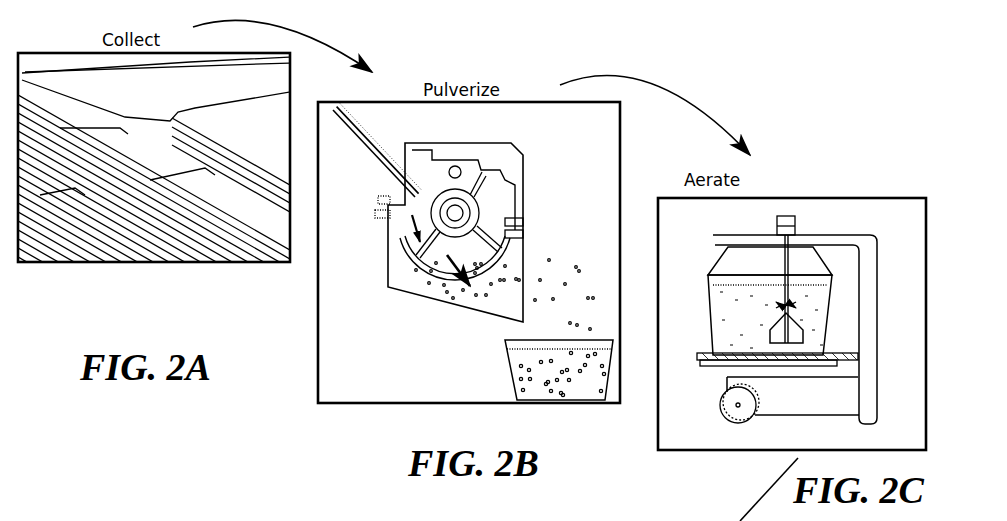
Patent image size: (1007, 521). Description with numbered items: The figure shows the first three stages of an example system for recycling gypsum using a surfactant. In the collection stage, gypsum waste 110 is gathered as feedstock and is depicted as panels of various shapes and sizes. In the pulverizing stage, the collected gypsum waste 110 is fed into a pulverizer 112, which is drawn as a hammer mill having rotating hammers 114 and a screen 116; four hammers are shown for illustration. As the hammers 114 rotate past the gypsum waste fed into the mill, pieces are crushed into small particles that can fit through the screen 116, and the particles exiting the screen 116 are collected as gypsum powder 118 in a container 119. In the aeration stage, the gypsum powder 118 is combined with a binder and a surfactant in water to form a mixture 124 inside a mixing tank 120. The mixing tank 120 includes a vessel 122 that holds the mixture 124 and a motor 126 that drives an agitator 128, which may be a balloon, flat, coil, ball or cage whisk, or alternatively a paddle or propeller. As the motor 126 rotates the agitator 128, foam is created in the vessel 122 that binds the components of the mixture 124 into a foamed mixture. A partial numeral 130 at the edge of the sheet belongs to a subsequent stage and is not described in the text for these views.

In FIG. 2A, the gypsum waste 110 is at (170, 270).
In FIG. 2B, the gypsum waste 110 is at (340, 132).
In FIG. 2B, the pulverizer 112 is at (606, 165).
In FIG. 2B, the rotating hammers 114 is at (497, 165).
In FIG. 2B, the screen 116 is at (387, 262).
In FIG. 2B, the gypsum powder 118 is at (540, 295).
In FIG. 2B, the container 119 is at (510, 375).
In FIG. 2C, the mixing tank 120 is at (866, 220).
In FIG. 2C, the vessel 122 is at (733, 264).
In FIG. 2C, the mixture 124 is at (740, 330).
In FIG. 2C, the motor 126 is at (788, 218).
In FIG. 2C, the agitator 128 is at (812, 338).
In FIG. 2A, the next stage component 130 is at (137, 516).